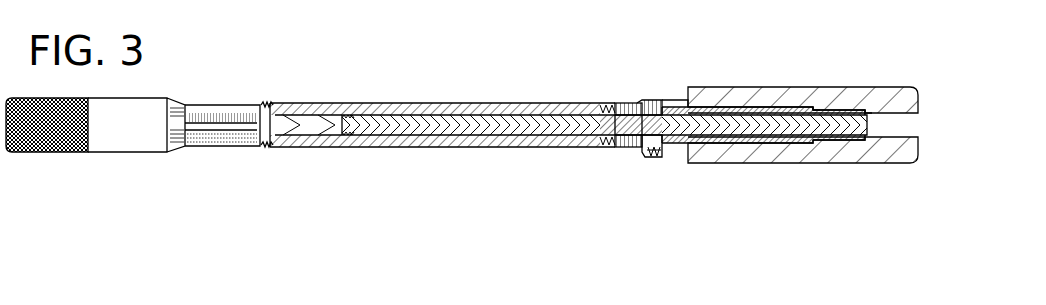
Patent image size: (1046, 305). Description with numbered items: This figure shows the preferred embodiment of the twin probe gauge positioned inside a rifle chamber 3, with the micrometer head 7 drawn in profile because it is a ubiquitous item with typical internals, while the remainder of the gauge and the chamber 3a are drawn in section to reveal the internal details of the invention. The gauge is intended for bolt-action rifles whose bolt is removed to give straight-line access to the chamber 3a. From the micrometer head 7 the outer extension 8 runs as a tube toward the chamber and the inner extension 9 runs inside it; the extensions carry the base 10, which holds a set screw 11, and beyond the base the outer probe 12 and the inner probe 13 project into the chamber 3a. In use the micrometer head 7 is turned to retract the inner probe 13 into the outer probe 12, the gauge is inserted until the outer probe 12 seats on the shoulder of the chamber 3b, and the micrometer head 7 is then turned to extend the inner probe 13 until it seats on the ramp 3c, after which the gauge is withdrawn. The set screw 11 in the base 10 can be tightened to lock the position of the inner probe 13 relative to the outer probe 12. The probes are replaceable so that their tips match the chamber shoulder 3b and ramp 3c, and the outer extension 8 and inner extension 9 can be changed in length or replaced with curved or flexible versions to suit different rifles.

The chamber 3 is at (867, 166).
The chamber 3a is at (681, 58).
The shoulder of the chamber 3b is at (820, 99).
The ramp 3c is at (862, 99).
The micrometer head 7 is at (174, 160).
The outer extension 8 is at (381, 155).
The inner extension 9 is at (459, 131).
The base 10 is at (631, 158).
The set screw 11 is at (653, 159).
The outer probe 12 is at (746, 144).
The inner probe 13 is at (788, 143).